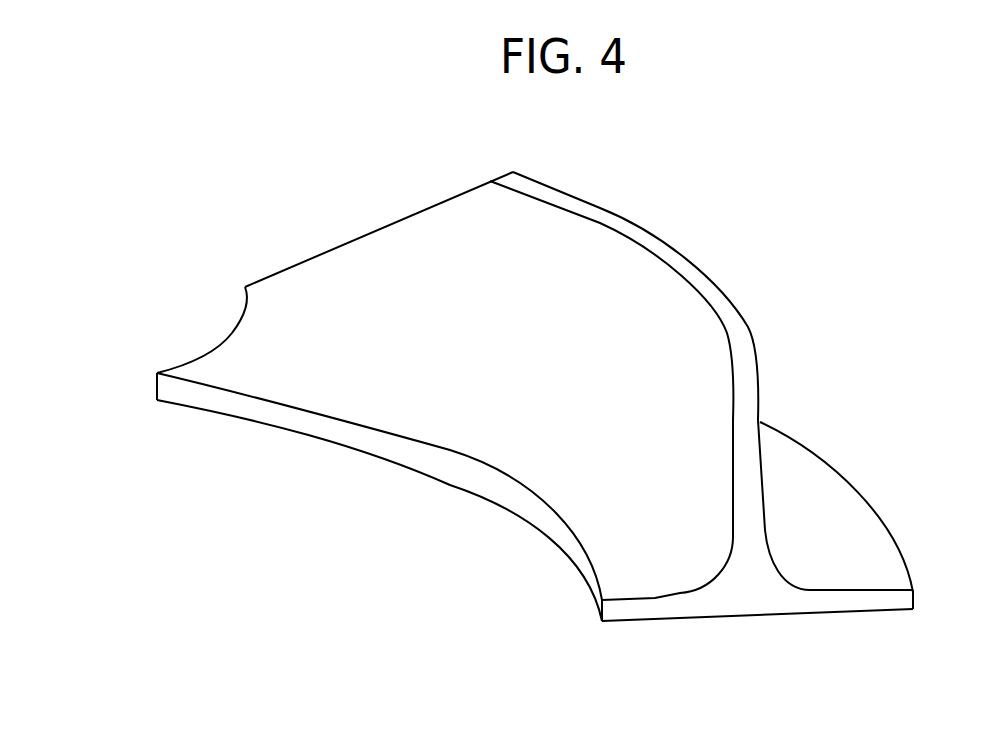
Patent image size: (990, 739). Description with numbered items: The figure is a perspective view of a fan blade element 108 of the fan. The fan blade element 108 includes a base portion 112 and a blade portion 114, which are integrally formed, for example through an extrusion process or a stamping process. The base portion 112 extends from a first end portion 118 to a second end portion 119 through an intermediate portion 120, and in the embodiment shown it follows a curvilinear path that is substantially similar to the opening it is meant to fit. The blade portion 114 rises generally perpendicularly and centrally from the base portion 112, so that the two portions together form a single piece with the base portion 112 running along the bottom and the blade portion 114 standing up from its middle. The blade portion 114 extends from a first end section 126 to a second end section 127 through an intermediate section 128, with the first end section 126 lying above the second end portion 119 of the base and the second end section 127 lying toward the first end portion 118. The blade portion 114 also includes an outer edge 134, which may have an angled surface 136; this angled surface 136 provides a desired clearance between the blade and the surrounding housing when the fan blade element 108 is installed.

The fan blade element 108 is at (298, 533).
The base portion 112 is at (720, 608).
The blade portion 114 is at (527, 375).
The first end portion 118 is at (602, 608).
The second end portion 119 is at (910, 600).
The intermediate portion 120 is at (749, 616).
The first end section 126 is at (750, 480).
The second end section 127 is at (230, 337).
The intermediate section 128 is at (453, 385).
The outer edge 134 is at (600, 207).
The angled surface 136 is at (372, 228).